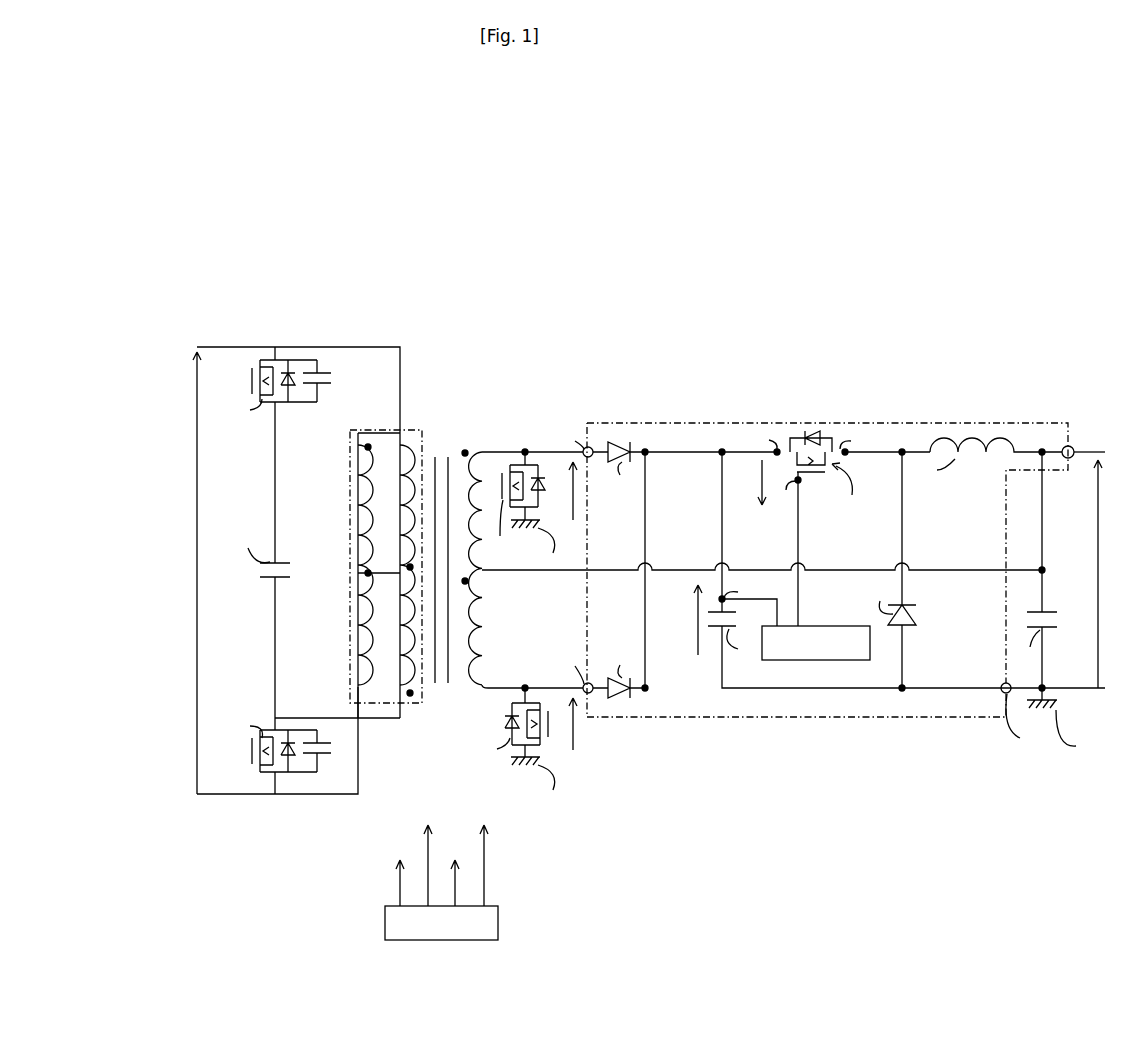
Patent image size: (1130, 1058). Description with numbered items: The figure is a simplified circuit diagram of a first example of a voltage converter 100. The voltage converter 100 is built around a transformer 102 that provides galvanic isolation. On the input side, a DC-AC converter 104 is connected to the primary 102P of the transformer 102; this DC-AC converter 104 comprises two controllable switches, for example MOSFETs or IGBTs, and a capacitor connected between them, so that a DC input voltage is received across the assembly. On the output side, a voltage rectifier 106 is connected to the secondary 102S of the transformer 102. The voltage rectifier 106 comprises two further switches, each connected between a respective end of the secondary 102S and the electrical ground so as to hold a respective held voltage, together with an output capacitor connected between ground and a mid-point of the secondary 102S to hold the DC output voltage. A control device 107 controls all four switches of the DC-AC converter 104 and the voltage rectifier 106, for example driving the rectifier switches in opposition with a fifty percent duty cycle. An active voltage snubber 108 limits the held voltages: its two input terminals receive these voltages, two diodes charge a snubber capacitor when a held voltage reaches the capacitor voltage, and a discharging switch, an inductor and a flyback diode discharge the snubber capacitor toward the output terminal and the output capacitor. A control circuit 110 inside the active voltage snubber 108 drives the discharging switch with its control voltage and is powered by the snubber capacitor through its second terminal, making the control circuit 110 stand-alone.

The voltage converter 100 is at (846, 254).
The transformer 102 is at (432, 720).
The primary 102P is at (355, 496).
The secondary 102S is at (470, 684).
The DC-AC converter 104 is at (231, 323).
The voltage rectifier 106 is at (515, 399).
The control device 107 is at (458, 931).
The active voltage snubber 108 is at (893, 720).
The control circuit 110 is at (834, 651).